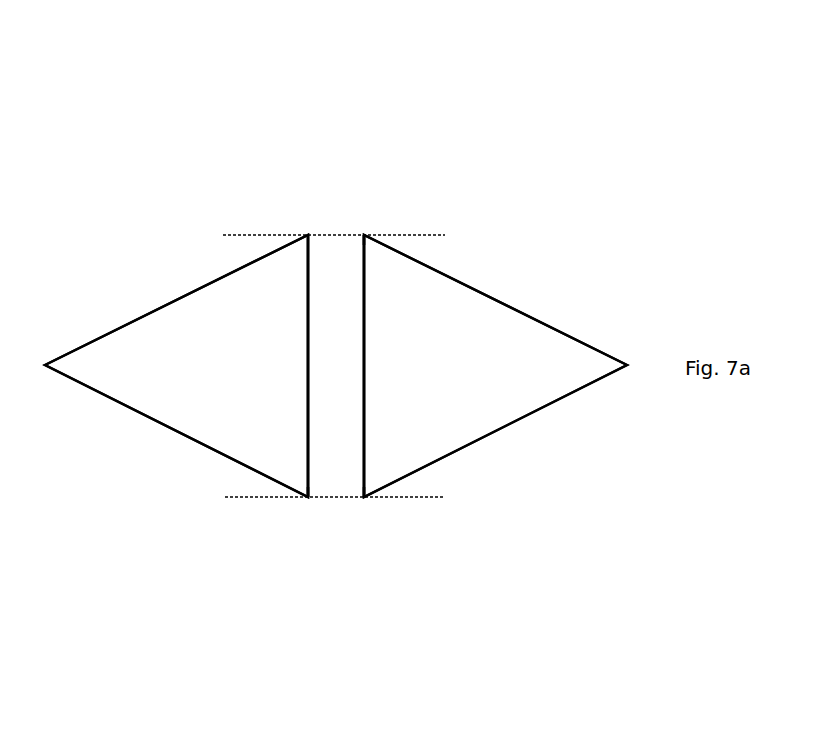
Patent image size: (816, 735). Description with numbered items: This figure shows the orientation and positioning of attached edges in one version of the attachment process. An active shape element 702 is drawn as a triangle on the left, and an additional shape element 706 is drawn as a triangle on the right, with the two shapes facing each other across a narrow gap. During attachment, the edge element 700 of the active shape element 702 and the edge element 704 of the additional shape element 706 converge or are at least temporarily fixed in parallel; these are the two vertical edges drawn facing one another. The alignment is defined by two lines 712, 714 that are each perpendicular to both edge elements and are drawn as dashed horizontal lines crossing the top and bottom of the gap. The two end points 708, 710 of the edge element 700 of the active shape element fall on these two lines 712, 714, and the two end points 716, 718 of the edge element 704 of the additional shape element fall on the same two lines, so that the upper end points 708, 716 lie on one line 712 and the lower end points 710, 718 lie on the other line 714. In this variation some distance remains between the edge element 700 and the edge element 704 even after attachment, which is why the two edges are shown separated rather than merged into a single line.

The edge element 700 is at (305, 350).
The active shape element 702 is at (220, 350).
The edge element 704 is at (365, 390).
The additional shape element 706 is at (455, 382).
The end point 708 is at (308, 235).
The end point 710 is at (308, 497).
The line 712 is at (443, 235).
The line 714 is at (245, 497).
The end point 716 is at (364, 235).
The end point 718 is at (364, 497).